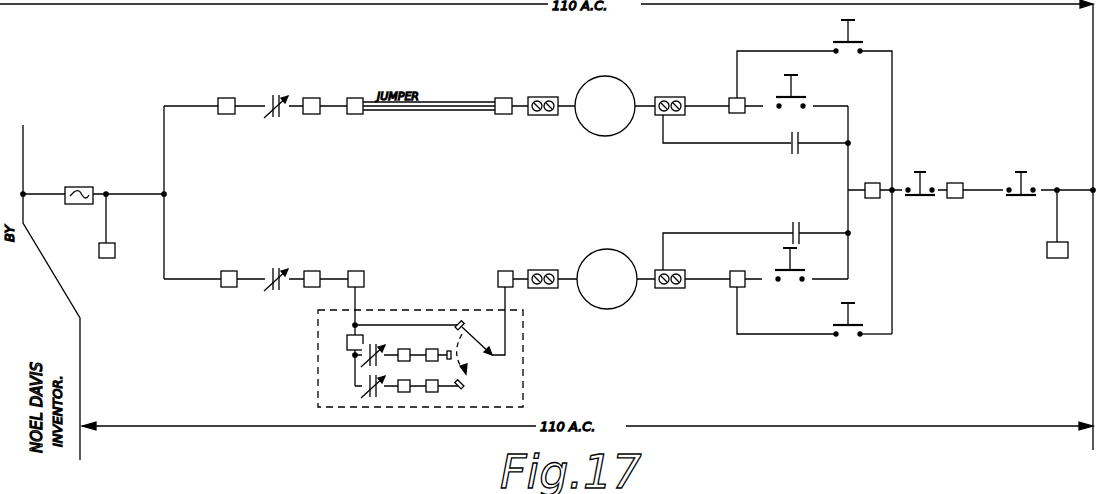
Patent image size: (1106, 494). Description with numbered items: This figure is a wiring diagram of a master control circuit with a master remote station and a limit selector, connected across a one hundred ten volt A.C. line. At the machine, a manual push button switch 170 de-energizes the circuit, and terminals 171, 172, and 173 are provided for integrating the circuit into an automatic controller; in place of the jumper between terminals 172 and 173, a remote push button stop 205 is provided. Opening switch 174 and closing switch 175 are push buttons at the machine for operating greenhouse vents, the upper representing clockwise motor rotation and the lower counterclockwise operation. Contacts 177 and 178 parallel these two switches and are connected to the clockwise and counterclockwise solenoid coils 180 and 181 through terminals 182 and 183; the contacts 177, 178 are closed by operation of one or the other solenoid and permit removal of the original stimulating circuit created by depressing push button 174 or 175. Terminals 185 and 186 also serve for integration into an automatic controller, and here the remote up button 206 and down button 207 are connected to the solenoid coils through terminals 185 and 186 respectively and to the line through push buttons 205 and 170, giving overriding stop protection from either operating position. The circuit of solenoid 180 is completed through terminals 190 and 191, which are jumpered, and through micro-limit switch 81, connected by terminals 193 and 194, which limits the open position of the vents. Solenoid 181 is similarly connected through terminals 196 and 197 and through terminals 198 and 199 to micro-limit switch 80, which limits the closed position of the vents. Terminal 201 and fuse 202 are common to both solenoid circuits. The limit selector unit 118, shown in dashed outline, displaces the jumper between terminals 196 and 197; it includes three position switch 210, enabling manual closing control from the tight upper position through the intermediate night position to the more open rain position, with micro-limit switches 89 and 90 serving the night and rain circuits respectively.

The micro-limit switch 80 is at (276, 300).
The micro-limit switch 81 is at (274, 94).
The micro-limit switch 89 is at (378, 347).
The micro-limit switch 90 is at (375, 396).
The limit selector unit 118 is at (449, 356).
The manual push button switch 170 is at (1030, 185).
The terminal 171 is at (1058, 259).
The terminal 172 is at (955, 199).
The terminal 173 is at (872, 199).
The opening switch 174 is at (800, 86).
The closing switch 175 is at (806, 258).
The contact 177 is at (795, 158).
The contact 178 is at (792, 222).
The clockwise solenoid coil 180 is at (598, 138).
The counterclockwise solenoid coil 181 is at (598, 252).
The terminal 182 is at (665, 97).
The terminal 183 is at (668, 290).
The terminal 185 is at (729, 98).
The terminal 186 is at (737, 271).
The terminal 190 is at (500, 116).
The terminal 191 is at (352, 115).
The terminal 193 is at (312, 116).
The terminal 194 is at (226, 98).
The terminal 196 is at (502, 271).
The terminal 197 is at (364, 276).
The terminal 198 is at (317, 271).
The terminal 199 is at (227, 288).
The terminal 201 is at (108, 259).
The fuse 202 is at (82, 186).
The remote push button stop 205 is at (928, 186).
The up button 206 is at (855, 31).
The down button 207 is at (843, 316).
The three position switch 210 is at (492, 329).